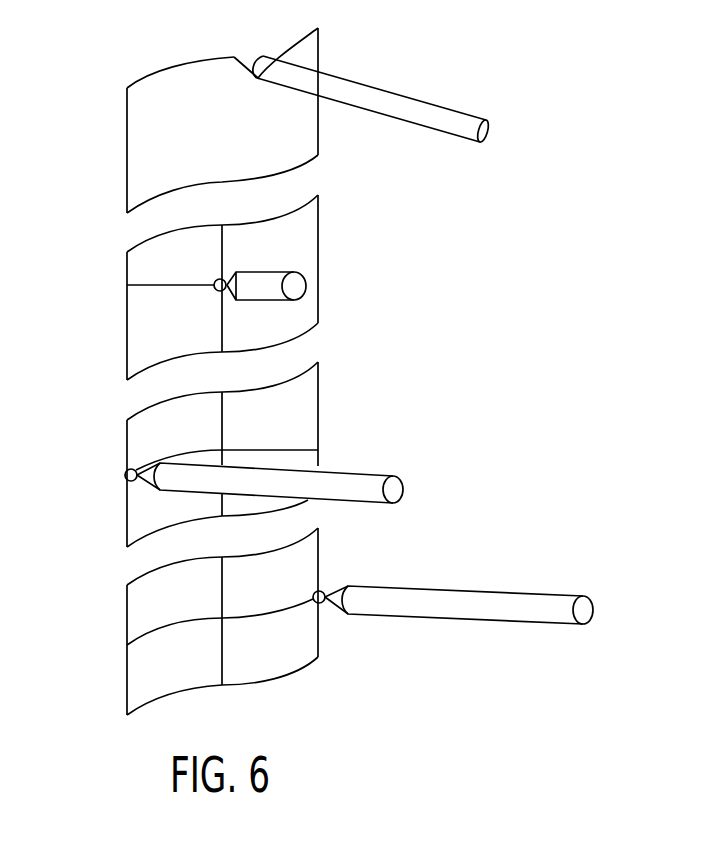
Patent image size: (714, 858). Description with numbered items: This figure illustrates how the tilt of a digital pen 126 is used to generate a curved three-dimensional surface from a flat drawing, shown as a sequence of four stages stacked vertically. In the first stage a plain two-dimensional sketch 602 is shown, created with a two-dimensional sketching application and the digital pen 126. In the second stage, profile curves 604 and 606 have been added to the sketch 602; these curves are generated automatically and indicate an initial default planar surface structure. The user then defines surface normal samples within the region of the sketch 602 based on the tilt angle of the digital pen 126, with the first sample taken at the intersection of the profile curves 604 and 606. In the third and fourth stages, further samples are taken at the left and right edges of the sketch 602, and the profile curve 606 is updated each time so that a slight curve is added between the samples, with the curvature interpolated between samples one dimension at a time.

The 2D sketch 602 is at (322, 46).
The profile curve 604 is at (228, 238).
The profile curve 606 is at (140, 287).
The digital pen 126 is at (387, 88).